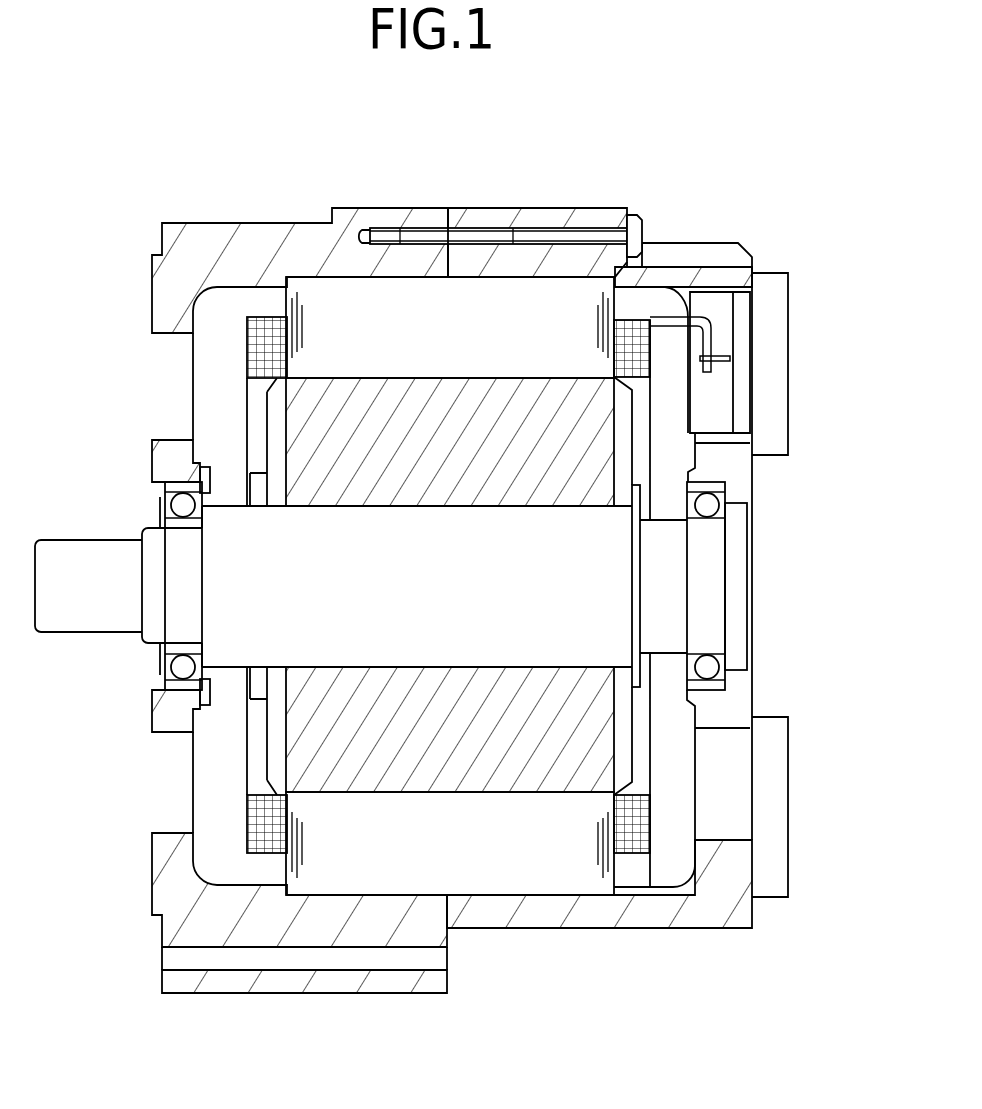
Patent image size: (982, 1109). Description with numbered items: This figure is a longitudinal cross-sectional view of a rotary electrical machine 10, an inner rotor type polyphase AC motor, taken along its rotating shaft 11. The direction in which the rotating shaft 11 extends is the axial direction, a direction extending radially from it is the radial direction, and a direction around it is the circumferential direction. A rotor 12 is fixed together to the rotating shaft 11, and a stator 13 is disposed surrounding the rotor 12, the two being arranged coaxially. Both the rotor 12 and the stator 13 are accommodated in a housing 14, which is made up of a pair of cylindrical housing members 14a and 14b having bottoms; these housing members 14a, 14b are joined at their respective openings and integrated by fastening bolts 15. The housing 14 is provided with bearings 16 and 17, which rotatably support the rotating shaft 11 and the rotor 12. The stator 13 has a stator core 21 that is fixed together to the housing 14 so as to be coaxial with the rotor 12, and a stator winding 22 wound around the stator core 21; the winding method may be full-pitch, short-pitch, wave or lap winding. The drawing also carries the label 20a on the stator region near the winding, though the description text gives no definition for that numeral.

The rotary electrical machine 10 is at (748, 182).
The rotating shaft 11 is at (85, 618).
The rotor 12 is at (592, 420).
The stator 13 is at (628, 995).
The housing 14 is at (493, 137).
The housing member 14a is at (390, 215).
The housing member 14b is at (482, 215).
The fastening bolt 15 is at (593, 233).
The bearing 16 is at (177, 485).
The bearing 17 is at (720, 500).
The insulator protruding portion 20a is at (300, 850).
The stator core 21 is at (538, 887).
The stator winding 22 is at (633, 857).